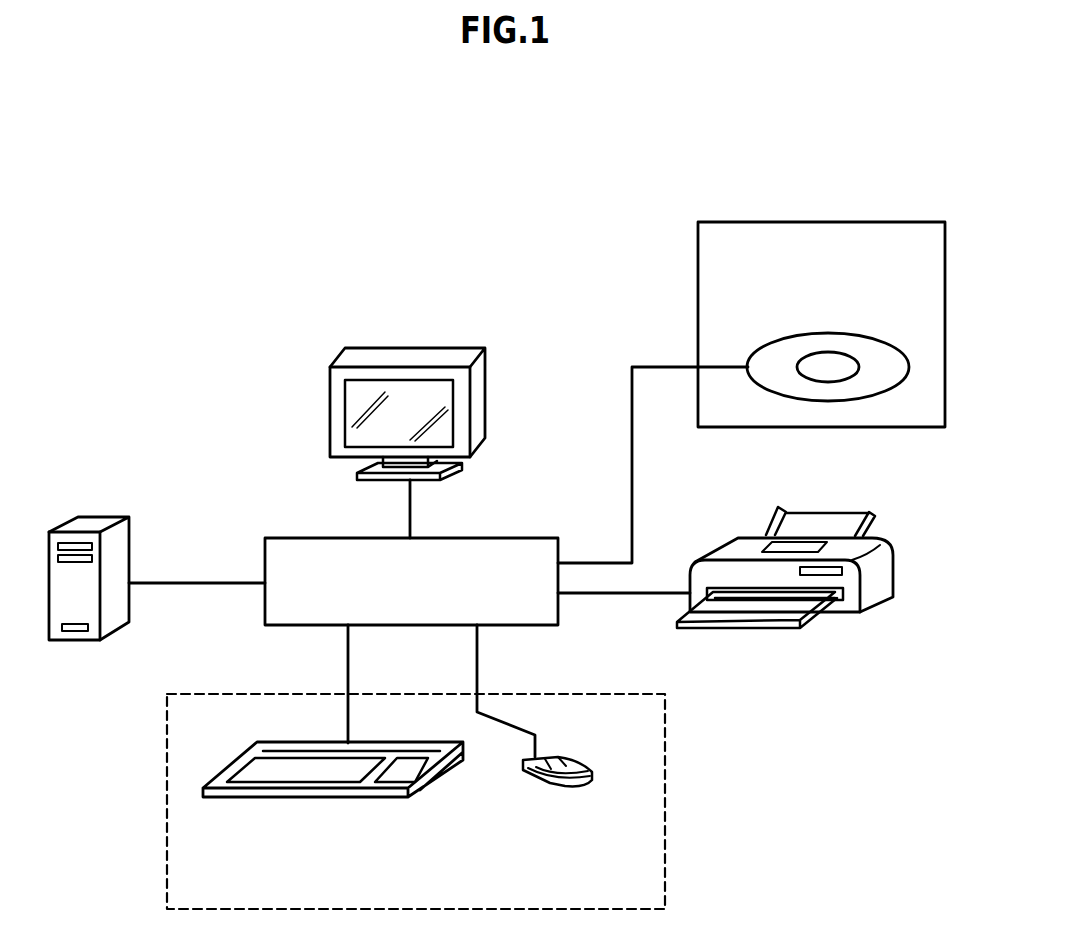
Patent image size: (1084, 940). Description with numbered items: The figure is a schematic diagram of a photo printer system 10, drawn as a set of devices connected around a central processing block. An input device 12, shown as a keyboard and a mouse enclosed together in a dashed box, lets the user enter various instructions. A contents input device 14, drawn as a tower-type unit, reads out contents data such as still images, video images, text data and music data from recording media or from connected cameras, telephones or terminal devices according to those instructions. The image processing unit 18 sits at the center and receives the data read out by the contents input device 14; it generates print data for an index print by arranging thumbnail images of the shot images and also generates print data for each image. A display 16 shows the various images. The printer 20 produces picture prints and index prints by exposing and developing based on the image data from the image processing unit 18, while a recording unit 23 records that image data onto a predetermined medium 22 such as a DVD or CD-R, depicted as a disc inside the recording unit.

The photo printer system 10 is at (607, 218).
The input device 12 is at (665, 798).
The contents input device 14 is at (100, 517).
The display 16 is at (330, 414).
The image processing unit 18 is at (537, 538).
The printer 20 is at (888, 540).
The predetermined medium 22 is at (831, 333).
The recording unit 23 is at (833, 222).